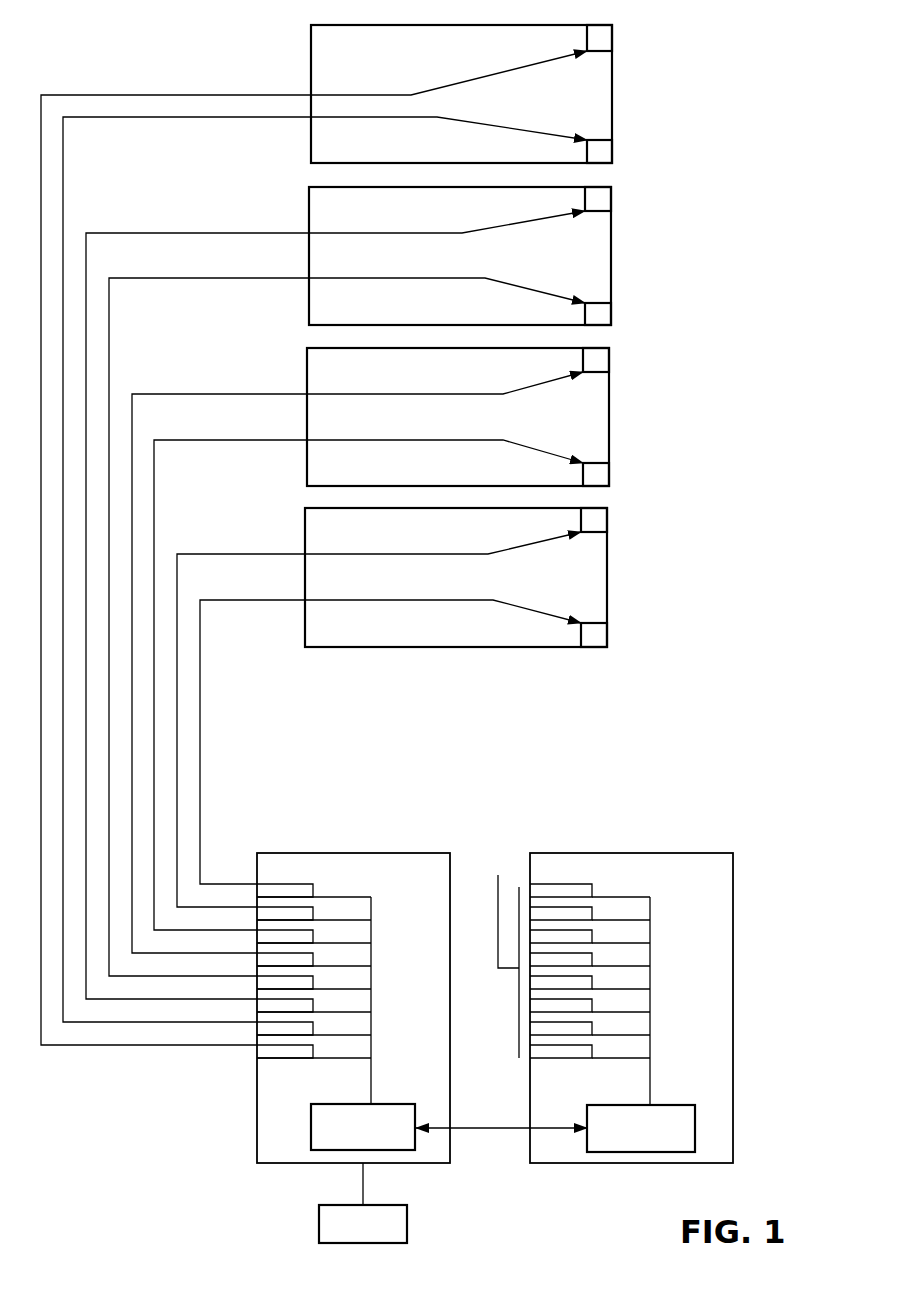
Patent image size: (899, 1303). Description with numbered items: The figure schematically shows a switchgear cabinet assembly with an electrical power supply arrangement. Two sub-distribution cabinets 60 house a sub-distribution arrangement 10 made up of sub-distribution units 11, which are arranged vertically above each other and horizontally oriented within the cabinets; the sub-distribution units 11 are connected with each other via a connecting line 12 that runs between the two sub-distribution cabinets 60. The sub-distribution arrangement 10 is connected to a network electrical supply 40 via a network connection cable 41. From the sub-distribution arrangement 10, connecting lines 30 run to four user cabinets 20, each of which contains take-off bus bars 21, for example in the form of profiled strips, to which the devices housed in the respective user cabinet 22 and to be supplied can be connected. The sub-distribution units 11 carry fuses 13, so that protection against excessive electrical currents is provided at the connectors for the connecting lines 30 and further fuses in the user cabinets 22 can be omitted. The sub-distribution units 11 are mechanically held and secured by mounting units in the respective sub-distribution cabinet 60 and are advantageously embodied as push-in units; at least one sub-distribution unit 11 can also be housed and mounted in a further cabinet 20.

The sub-distribution arrangement 10 is at (629, 830).
The sub-distribution unit 11 is at (311, 1129).
The connecting line 12 is at (500, 1130).
The fuse 13 is at (285, 873).
The user cabinet 20 is at (656, 439).
The take-off bus bar 21 is at (607, 637).
The user cabinet 22 is at (611, 260).
The connecting line 30 is at (201, 752).
The network electrical supply 40 is at (319, 1228).
The network connection cable 41 is at (363, 1185).
The sub-distribution cabinet 60 is at (733, 1005).